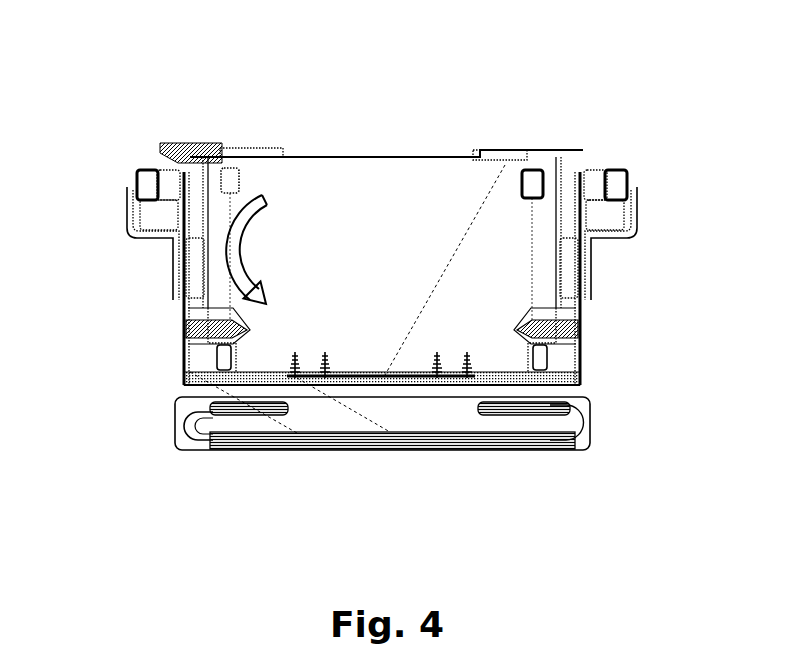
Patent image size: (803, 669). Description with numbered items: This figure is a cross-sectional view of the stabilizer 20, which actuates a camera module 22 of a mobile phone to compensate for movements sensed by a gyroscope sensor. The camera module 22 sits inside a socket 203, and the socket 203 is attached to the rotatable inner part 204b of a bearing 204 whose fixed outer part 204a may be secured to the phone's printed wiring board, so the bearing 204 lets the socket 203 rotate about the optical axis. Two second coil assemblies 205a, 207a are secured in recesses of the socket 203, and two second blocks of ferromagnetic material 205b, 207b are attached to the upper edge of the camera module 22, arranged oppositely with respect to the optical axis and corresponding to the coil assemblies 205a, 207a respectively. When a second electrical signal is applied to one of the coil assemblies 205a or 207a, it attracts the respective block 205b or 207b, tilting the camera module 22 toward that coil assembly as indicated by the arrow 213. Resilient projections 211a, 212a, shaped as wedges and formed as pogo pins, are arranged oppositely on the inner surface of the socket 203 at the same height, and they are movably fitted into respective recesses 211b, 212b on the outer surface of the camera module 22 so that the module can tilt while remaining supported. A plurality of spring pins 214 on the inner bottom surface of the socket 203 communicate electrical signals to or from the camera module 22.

The stabilizer 20 is at (712, 15).
The camera module 22 is at (432, 157).
The socket 203 is at (182, 257).
The bearing 204 is at (390, 455).
The fixed outer part 204a is at (188, 440).
The rotatable inner part 204b is at (358, 422).
The second coil assembly 205a is at (147, 190).
The second block of ferromagnetic material 205b is at (232, 182).
The second coil assembly 207a is at (622, 175).
The second block of ferromagnetic material 207b is at (537, 172).
The resilient projection 211a is at (198, 352).
The recess 211b is at (237, 317).
The resilient projection 212a is at (567, 352).
The recess 212b is at (530, 322).
The arrow 213 is at (257, 265).
The spring pins 214 is at (467, 380).